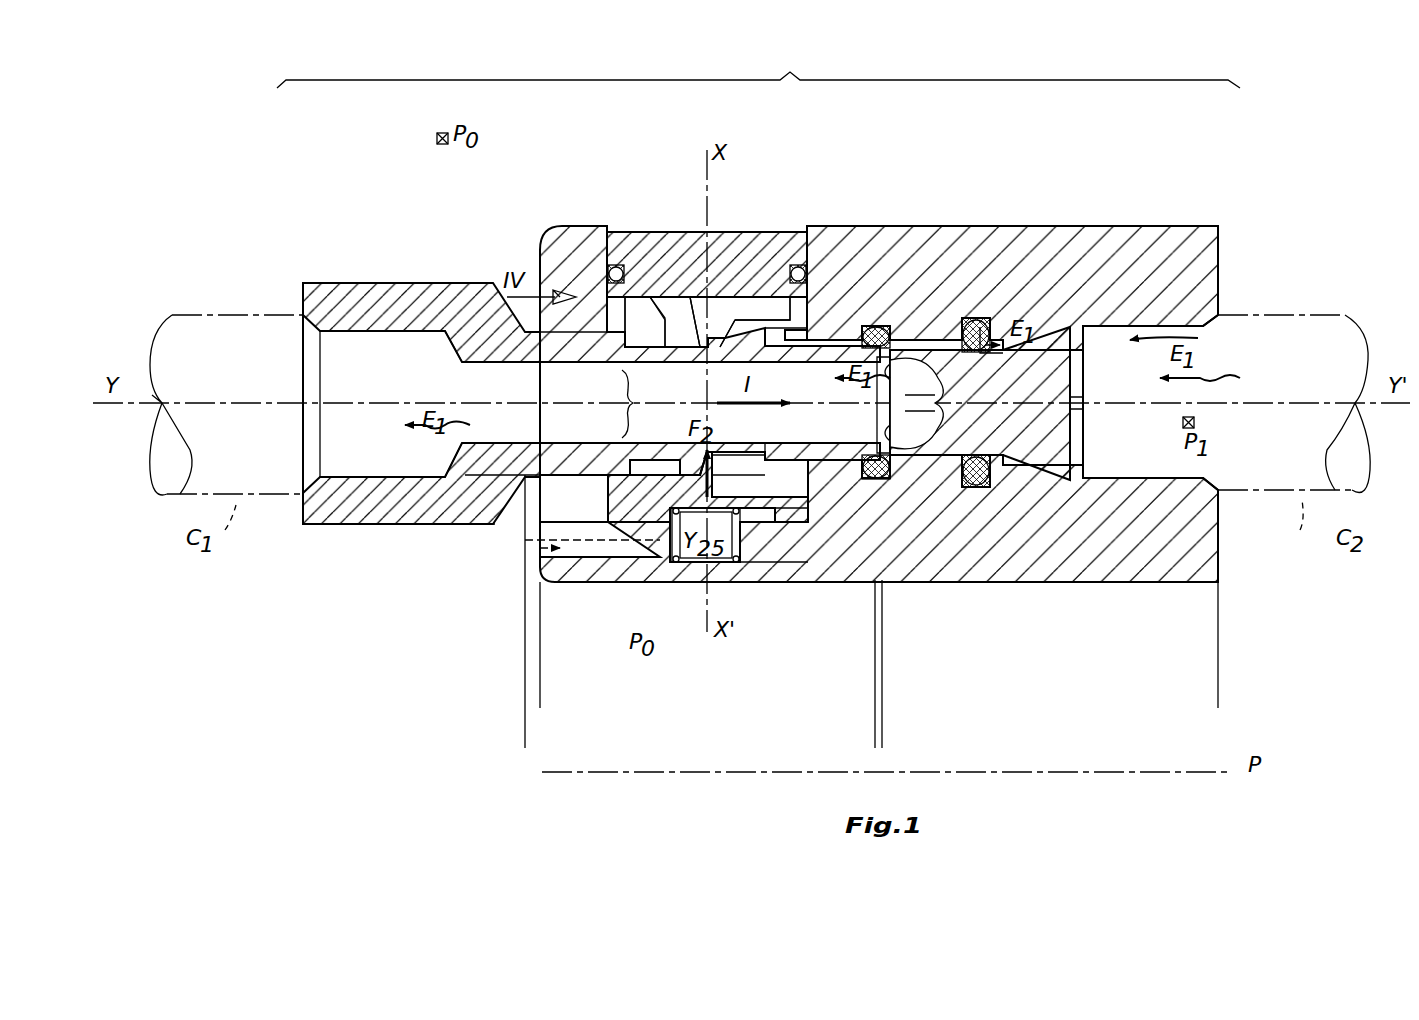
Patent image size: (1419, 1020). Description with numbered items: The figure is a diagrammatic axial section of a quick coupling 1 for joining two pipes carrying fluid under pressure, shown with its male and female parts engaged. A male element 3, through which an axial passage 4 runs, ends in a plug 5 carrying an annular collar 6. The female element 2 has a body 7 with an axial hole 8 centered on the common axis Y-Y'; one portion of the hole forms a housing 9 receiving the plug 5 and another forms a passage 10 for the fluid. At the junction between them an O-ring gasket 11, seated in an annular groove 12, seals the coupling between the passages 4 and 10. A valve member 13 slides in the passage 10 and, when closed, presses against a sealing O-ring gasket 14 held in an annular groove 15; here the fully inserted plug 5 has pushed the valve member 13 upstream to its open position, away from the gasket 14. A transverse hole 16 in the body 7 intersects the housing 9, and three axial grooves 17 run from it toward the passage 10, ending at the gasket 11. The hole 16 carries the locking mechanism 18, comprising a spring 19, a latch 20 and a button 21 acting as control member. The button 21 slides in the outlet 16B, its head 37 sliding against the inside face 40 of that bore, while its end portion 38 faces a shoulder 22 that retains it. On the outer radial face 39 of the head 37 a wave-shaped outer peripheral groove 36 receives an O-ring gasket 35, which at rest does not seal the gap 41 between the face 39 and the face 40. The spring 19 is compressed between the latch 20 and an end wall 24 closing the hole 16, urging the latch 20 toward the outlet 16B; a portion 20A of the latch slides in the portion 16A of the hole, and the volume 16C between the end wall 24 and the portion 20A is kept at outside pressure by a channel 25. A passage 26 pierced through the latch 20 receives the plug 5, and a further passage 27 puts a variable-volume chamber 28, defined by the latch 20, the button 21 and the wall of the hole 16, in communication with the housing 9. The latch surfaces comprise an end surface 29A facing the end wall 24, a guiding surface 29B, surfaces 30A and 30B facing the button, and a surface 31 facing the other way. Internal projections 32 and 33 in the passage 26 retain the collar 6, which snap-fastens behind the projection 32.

The quick coupling 1 is at (758, 65).
The female element 2 is at (1143, 197).
The male element 3 is at (357, 237).
The axial passage 4 is at (335, 370).
The plug 5 is at (525, 742).
The annular collar 6 is at (728, 330).
The body 7 is at (1195, 240).
The axial hole 8 is at (1195, 340).
The housing 9 is at (875, 702).
The passage 10 is at (882, 702).
The O-ring gasket 11 is at (876, 324).
The annular groove 12 is at (882, 478).
The valve member 13 is at (1040, 415).
The sealing O-ring gasket 14 is at (975, 318).
The annular groove 15 is at (980, 480).
The hole 16 is at (588, 585).
The portion of the hole 16A is at (478, 475).
The outlet of the hole 16B is at (607, 227).
The volume 16C is at (807, 583).
The axial grooves 17 is at (760, 300).
The locking mechanism 18 is at (638, 404).
The spring 19 is at (600, 480).
The latch 20 is at (520, 445).
The portion of the latch 20A is at (578, 475).
The button 21 is at (500, 362).
The shoulder 22 is at (780, 490).
The end wall 24 is at (675, 583).
The channel 25 is at (548, 541).
The passage 26 is at (790, 470).
The passage 27 is at (687, 305).
The chamber 28 is at (645, 320).
The end surface 29A is at (743, 583).
The guiding surface 29B is at (837, 582).
The surface 30A is at (735, 480).
The surface 30B is at (628, 300).
The surface 31 is at (650, 345).
The internal projection 32 is at (700, 470).
The internal projection 33 is at (665, 330).
The O-ring gasket 35 is at (618, 265).
The outer peripheral groove 36 is at (822, 330).
The head 37 is at (695, 300).
The end portion 38 is at (812, 488).
The outer radial face 39 is at (808, 310).
The inside face 40 is at (860, 330).
The gap 41 is at (804, 229).